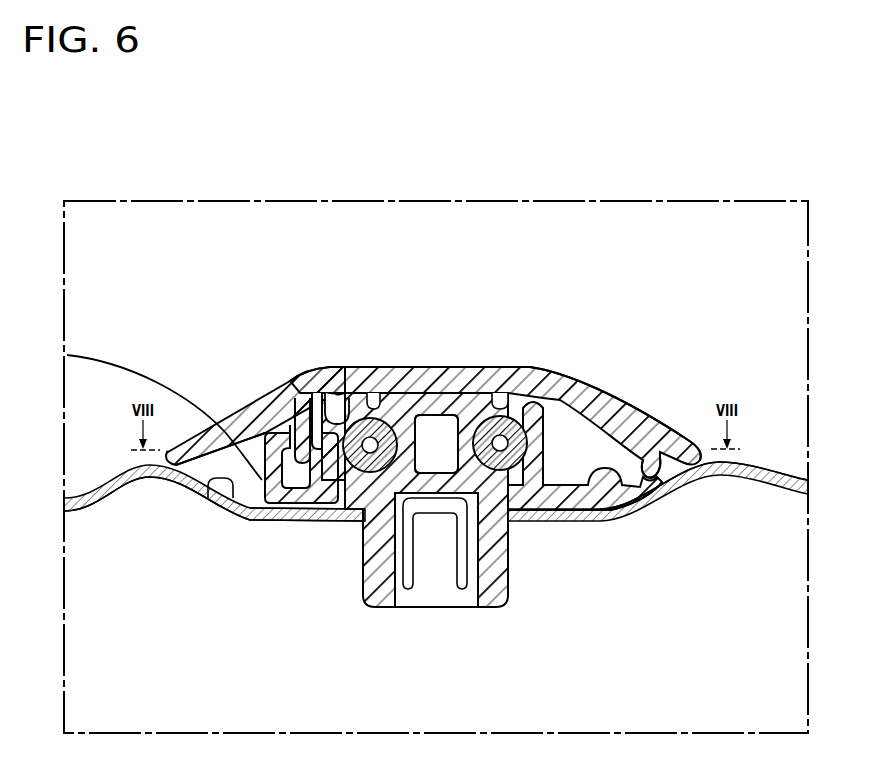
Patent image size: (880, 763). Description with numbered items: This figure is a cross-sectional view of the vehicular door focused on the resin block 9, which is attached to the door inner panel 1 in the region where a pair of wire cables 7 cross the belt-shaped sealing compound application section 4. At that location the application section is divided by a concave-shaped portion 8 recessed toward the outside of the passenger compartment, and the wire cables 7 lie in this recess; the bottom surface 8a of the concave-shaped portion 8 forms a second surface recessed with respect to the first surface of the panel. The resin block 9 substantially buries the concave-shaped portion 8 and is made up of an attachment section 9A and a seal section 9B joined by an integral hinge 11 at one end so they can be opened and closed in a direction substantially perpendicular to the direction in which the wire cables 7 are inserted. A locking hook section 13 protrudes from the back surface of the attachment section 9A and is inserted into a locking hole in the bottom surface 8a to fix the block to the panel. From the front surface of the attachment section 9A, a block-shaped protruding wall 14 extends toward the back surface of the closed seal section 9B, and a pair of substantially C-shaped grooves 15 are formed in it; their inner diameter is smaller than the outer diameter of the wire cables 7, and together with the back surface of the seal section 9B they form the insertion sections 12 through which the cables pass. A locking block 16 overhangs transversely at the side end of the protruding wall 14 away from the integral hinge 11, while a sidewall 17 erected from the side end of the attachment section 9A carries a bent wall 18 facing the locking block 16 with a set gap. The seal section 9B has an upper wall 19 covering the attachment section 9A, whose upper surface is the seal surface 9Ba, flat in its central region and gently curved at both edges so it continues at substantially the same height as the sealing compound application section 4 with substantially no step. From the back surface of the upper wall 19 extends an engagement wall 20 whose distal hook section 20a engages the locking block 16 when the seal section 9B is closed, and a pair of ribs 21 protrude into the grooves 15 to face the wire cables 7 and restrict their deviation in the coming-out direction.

The door inner panel 1 is at (786, 459).
The sealing compound application section 4 is at (150, 467).
The wire cables 7 is at (358, 488).
The concave-shaped portion 8 is at (222, 510).
The bottom surface 8a is at (312, 508).
The resin block 9 is at (503, 354).
The attachment section 9A is at (588, 512).
The seal section 9B is at (272, 392).
The seal surface 9Ba is at (583, 395).
The integral hinge 11 is at (650, 474).
The insertion sections 12 is at (347, 378).
The locking hook section 13 is at (380, 604).
The protruding wall 14 is at (433, 370).
The grooves 15 is at (370, 455).
The locking block 16 is at (326, 440).
The sidewall 17 is at (218, 426).
The bent wall 18 is at (262, 437).
The upper wall 19 is at (592, 390).
The engagement wall 20 is at (300, 425).
The hook section 20a is at (222, 498).
The ribs 21 is at (362, 408).